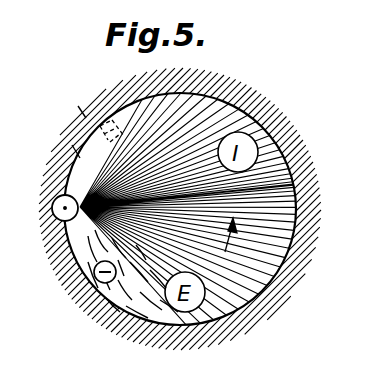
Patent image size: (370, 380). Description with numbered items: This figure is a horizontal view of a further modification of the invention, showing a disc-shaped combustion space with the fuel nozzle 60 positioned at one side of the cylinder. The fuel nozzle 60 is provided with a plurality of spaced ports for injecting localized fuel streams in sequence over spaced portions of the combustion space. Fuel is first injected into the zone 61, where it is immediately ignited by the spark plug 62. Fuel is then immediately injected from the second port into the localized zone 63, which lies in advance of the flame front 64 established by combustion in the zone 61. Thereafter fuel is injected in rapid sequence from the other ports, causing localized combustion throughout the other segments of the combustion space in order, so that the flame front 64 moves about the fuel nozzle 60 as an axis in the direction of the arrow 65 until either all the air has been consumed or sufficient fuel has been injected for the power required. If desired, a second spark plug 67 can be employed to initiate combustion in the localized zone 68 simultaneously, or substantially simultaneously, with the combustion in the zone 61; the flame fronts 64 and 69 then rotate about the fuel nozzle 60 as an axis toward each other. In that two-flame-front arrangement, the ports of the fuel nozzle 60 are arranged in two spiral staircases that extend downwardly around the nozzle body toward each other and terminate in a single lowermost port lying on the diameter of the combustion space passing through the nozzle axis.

The fuel nozzle 60 is at (52, 207).
The zone 61 is at (68, 239).
The spark plug 62 is at (84, 274).
The localized zone 63 is at (236, 298).
The flame front 64 is at (118, 271).
The arrow 65 is at (230, 245).
The second spark plug 67 is at (82, 111).
The localized zone 68 is at (76, 152).
The flame front 69 is at (128, 124).